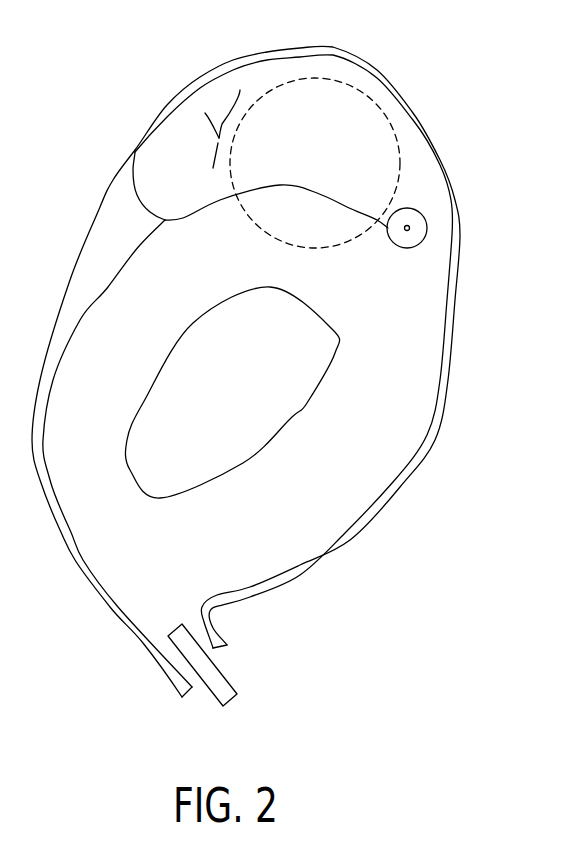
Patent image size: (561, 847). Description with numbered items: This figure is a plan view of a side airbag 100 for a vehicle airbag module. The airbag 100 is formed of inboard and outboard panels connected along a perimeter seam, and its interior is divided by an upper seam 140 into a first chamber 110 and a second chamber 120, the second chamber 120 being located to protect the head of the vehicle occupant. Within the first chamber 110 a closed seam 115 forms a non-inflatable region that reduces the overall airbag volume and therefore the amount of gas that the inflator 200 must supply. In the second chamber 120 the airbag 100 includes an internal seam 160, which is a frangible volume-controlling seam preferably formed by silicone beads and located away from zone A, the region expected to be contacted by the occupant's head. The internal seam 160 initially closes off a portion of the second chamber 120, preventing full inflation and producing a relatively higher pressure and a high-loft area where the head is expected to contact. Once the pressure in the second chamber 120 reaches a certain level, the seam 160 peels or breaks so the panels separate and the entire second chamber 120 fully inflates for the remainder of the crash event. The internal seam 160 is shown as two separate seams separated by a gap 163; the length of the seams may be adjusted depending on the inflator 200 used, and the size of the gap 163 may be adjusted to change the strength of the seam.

The airbag 100 is at (447, 310).
The first chamber 110 is at (130, 297).
The closed seam 115 is at (290, 418).
The second chamber 120 is at (147, 153).
The upper seam 140 is at (317, 193).
The internal seam 160 is at (240, 90).
The gap 163 is at (205, 113).
The zone A is at (380, 110).
The inflator 200 is at (229, 683).